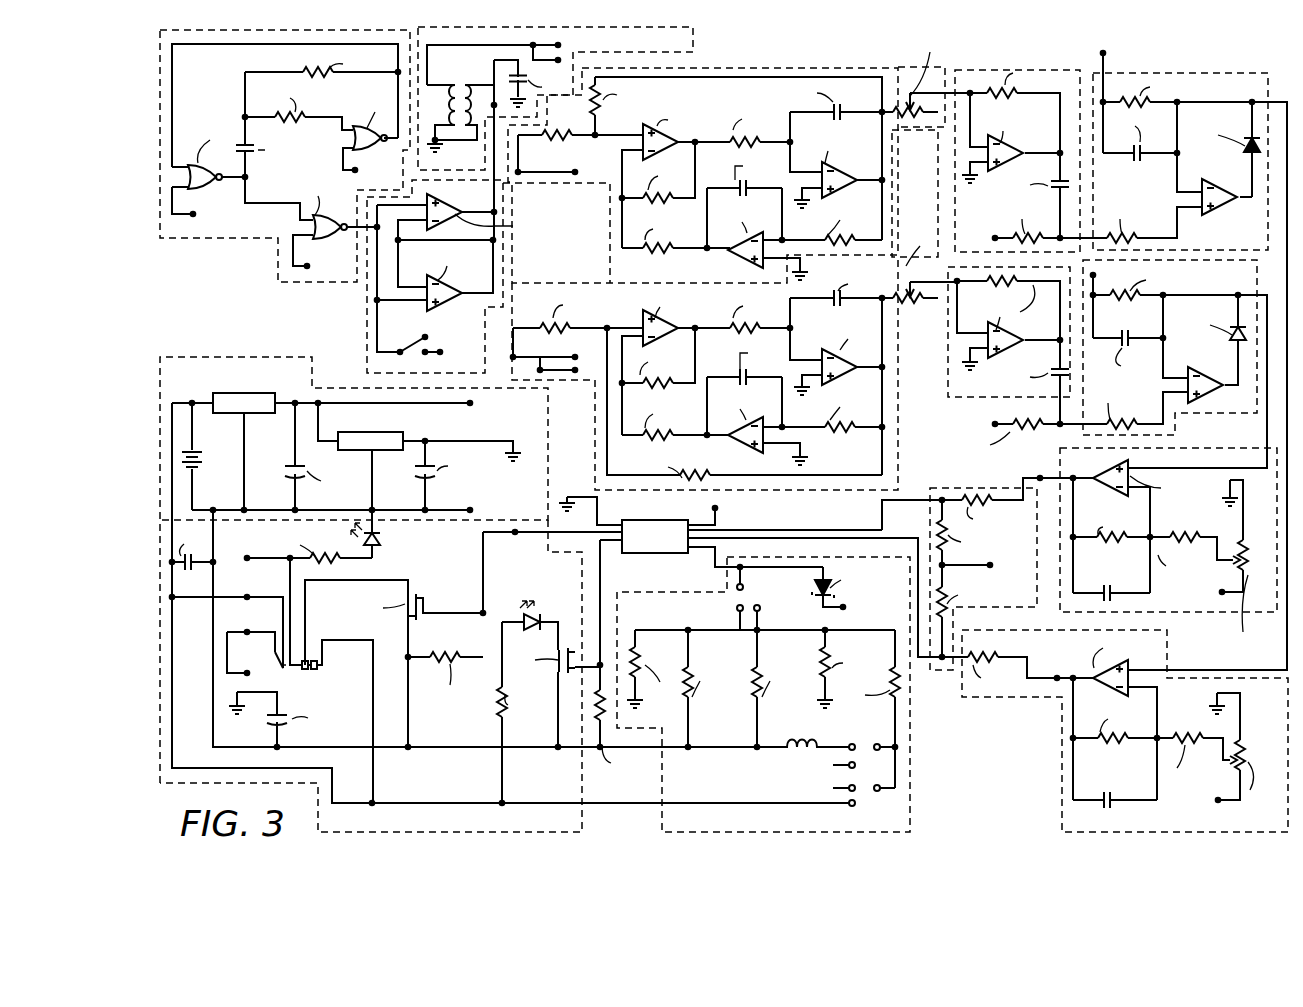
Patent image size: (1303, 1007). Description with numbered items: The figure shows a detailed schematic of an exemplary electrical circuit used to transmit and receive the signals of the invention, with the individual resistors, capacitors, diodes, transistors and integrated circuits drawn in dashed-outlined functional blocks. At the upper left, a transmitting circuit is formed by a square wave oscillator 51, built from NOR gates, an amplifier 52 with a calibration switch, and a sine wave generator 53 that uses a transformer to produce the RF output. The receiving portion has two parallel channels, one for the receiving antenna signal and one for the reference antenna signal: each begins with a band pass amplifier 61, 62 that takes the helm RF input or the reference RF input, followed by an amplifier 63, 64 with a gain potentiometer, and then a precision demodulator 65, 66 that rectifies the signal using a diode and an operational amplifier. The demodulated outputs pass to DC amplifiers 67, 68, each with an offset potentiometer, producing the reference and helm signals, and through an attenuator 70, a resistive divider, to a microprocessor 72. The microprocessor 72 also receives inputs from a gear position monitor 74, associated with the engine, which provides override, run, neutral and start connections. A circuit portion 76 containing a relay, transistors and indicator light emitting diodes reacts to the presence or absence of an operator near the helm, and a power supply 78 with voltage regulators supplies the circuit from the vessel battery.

The square wave oscillator 51 is at (238, 240).
The amplifier 52 is at (365, 320).
The sine wave generator 53 is at (695, 45).
The band pass amplifier 61 is at (766, 68).
The band pass amplifier 62 is at (594, 462).
The amplifier 63 is at (1062, 70).
The amplifier 64 is at (948, 358).
The precision demodulator 65 is at (1200, 73).
The precision demodulator 66 is at (1178, 415).
The DC amplifier 67 is at (1173, 612).
The DC amplifier 68 is at (1062, 755).
The attenuator 70 is at (972, 488).
The microprocessor 72 is at (640, 553).
The gear position monitor 74 is at (912, 750).
The circuit portion 76 is at (584, 826).
The power supply 78 is at (233, 357).